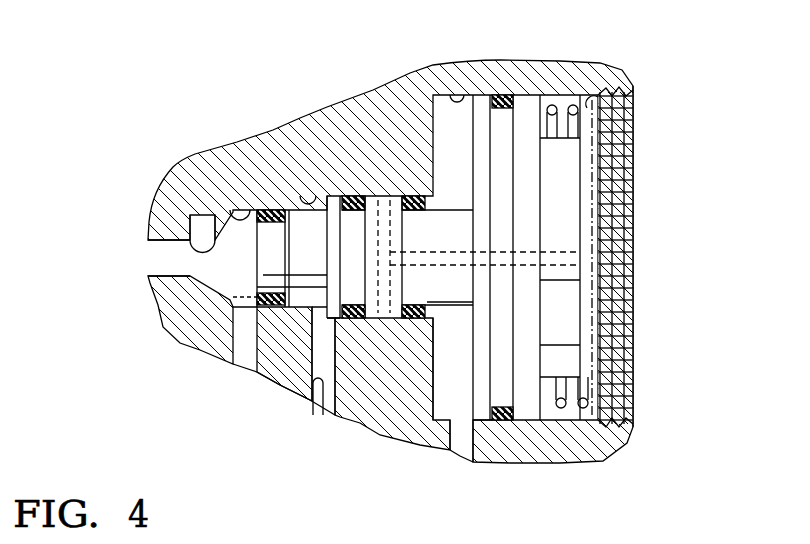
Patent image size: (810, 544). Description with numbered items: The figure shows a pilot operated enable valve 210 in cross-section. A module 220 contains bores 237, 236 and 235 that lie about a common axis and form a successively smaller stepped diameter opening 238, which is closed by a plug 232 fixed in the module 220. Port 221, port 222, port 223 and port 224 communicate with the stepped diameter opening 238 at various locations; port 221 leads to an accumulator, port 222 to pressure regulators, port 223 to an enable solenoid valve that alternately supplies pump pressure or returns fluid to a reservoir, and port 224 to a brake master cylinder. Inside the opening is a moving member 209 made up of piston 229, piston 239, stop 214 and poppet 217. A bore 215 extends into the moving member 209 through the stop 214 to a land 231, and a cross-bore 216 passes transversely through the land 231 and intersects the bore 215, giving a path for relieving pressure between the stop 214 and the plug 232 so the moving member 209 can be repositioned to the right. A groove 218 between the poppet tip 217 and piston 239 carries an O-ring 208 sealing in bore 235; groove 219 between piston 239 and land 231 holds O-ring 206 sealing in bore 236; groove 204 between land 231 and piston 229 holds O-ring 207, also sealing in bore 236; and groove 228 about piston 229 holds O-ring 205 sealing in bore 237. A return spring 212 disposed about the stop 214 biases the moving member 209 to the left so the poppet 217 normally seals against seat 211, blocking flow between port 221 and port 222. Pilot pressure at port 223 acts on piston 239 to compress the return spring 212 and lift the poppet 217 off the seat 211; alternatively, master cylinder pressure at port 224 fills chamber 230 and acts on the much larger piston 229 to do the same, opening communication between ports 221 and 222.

The groove 204 is at (408, 345).
The O-ring 205 is at (505, 93).
The O-ring 206 is at (350, 194).
The O-ring 207 is at (414, 194).
The O-ring 208 is at (272, 208).
The moving member 209 is at (562, 172).
The enable valve 210 is at (652, 312).
The seat 211 is at (191, 215).
The return spring 212 is at (586, 406).
The stop 214 is at (580, 280).
The bore 215 is at (575, 252).
The cross-bore 216 is at (381, 200).
The poppet 217 is at (220, 272).
The groove 218 is at (262, 255).
The groove 219 is at (351, 322).
The module 220 is at (493, 68).
The port 221 is at (165, 240).
The port 222 is at (250, 320).
The port 223 is at (320, 382).
The port 224 is at (472, 443).
The groove 228 is at (502, 422).
The piston 229 is at (484, 428).
The chamber 230 is at (418, 322).
The land 231 is at (392, 327).
The plug 232 is at (620, 204).
The bore 235 is at (240, 208).
The bore 236 is at (304, 194).
The bore 237 is at (452, 93).
The stepped diameter opening 238 is at (600, 108).
The piston 239 is at (327, 318).